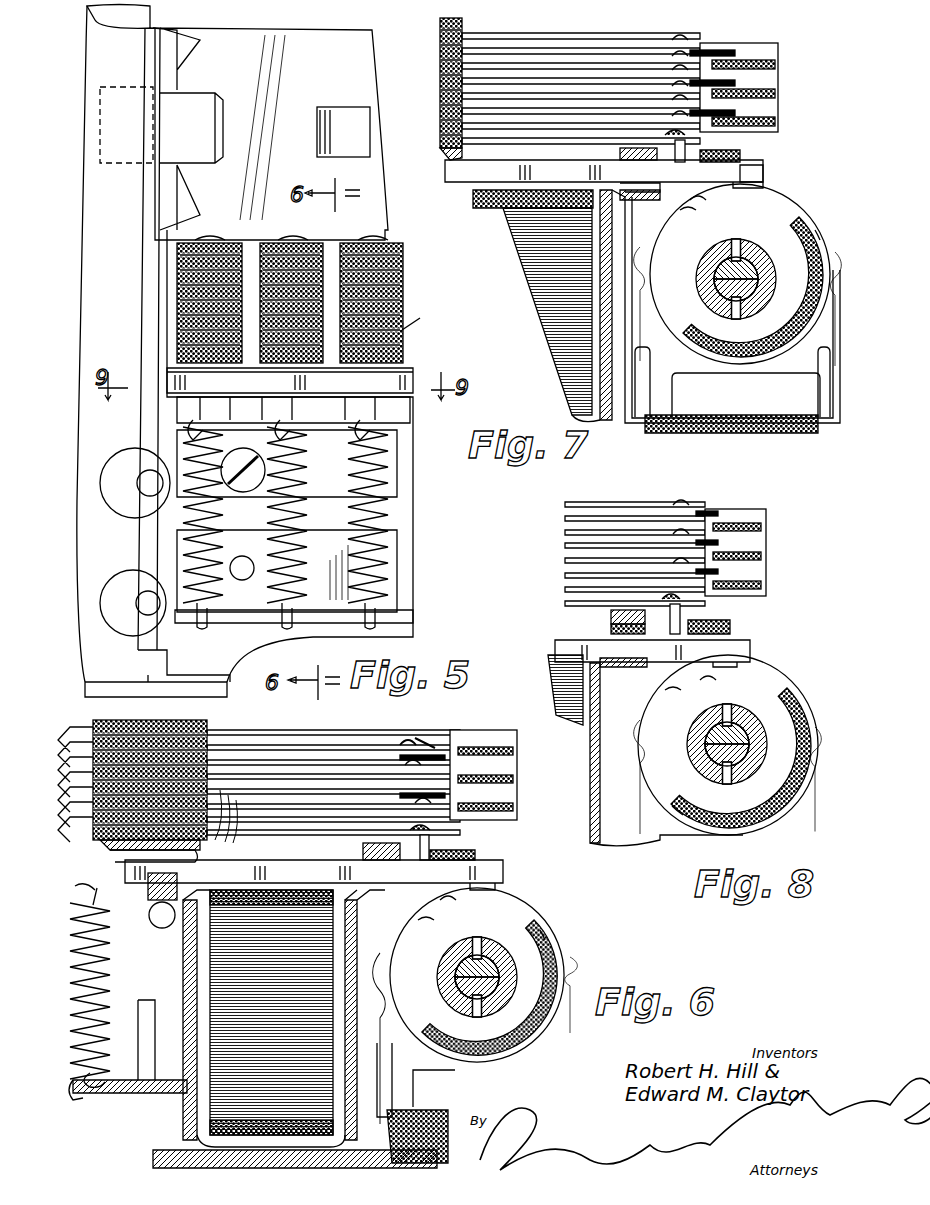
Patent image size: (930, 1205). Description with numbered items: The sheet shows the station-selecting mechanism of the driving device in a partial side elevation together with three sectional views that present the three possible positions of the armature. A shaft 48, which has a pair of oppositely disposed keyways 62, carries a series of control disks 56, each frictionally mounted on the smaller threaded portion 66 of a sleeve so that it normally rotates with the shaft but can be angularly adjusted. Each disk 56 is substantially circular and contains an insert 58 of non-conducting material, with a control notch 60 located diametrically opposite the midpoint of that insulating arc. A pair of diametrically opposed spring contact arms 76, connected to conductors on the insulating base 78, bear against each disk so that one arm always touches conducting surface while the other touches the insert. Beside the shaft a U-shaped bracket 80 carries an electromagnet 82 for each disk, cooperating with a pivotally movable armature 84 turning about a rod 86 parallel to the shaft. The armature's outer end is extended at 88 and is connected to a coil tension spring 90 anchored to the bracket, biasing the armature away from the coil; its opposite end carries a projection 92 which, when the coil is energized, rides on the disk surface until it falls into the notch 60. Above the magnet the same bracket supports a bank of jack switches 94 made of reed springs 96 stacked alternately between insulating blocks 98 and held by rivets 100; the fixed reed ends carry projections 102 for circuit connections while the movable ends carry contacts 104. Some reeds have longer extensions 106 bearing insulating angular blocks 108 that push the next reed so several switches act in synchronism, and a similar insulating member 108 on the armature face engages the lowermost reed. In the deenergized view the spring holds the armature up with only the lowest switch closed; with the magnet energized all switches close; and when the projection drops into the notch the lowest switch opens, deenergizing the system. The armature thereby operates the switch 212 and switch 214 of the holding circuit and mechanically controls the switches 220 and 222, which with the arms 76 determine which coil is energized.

In FIG. 7, the shaft 48 is at (700, 278).
In FIG. 8, the shaft 48 is at (757, 730).
In FIG. 6, the shaft 48 is at (500, 965).
In FIG. 7, the control disk 56 is at (788, 200).
In FIG. 8, the control disk 56 is at (777, 672).
In FIG. 6, the control disk 56 is at (520, 900).
In FIG. 7, the insert of non-electrical conducting material 58 is at (814, 226).
In FIG. 8, the insert of non-electrical conducting material 58 is at (683, 815).
In FIG. 6, the insert of non-electrical conducting material 58 is at (555, 933).
In FIG. 7, the control notch 60 is at (670, 210).
In FIG. 8, the control notch 60 is at (706, 683).
In FIG. 6, the control notch 60 is at (432, 912).
In FIG. 7, the keyways 62 is at (762, 272).
In FIG. 8, the keyways 62 is at (700, 735).
In FIG. 6, the keyways 62 is at (450, 968).
In FIG. 7, the smaller diameter threaded portion 66 is at (736, 239).
In FIG. 8, the smaller diameter threaded portion 66 is at (727, 704).
In FIG. 6, the smaller diameter threaded portion 66 is at (470, 1010).
In FIG. 7, the spring contact arms 76 is at (742, 295).
In FIG. 8, the spring contact arms 76 is at (729, 761).
In FIG. 6, the spring contact arms 76 is at (482, 1038).
In FIG. 7, the insulating base 78 is at (802, 415).
In FIG. 6, the insulating base 78 is at (410, 1110).
In FIG. 5, the U-shaped bracket 80 is at (400, 492).
In FIG. 7, the U-shaped bracket 80 is at (610, 210).
In FIG. 8, the U-shaped bracket 80 is at (600, 780).
In FIG. 6, the U-shaped bracket 80 is at (357, 935).
In FIG. 7, the electromagnet 82 is at (532, 294).
In FIG. 8, the electromagnet 82 is at (558, 676).
In FIG. 6, the electromagnet 82 is at (210, 1105).
In FIG. 5, the armature 84 is at (200, 410).
In FIG. 7, the armature 84 is at (572, 175).
In FIG. 8, the armature 84 is at (587, 648).
In FIG. 6, the armature 84 is at (256, 878).
In FIG. 5, the rod 86 is at (277, 469).
In FIG. 6, the rod 86 is at (155, 900).
In FIG. 5, the armature extension 88 is at (200, 430).
In FIG. 6, the armature extension 88 is at (80, 888).
In FIG. 5, the coil tension spring 90 is at (285, 525).
In FIG. 6, the coil tension spring 90 is at (110, 968).
In FIG. 7, the projection 92 is at (750, 172).
In FIG. 8, the projection 92 is at (730, 650).
In FIG. 6, the projection 92 is at (500, 890).
In FIG. 7, the jack switches 94 is at (549, 87).
In FIG. 8, the jack switches 94 is at (617, 544).
In FIG. 6, the jack switches 94 is at (259, 785).
In FIG. 7, the reed springs 96 is at (445, 90).
In FIG. 8, the reed springs 96 is at (577, 575).
In FIG. 6, the reed springs 96 is at (240, 838).
In FIG. 5, the insulating blocks 98 is at (418, 320).
In FIG. 7, the insulating blocks 98 is at (440, 128).
In FIG. 6, the insulating blocks 98 is at (95, 846).
In FIG. 5, the rivets 100 is at (185, 368).
In FIG. 6, the rivets 100 is at (120, 860).
In FIG. 5, the projections 102 is at (385, 282).
In FIG. 6, the projections 102 is at (75, 773).
In FIG. 7, the contacts 104 is at (700, 140).
In FIG. 8, the contacts 104 is at (685, 514).
In FIG. 6, the contacts 104 is at (415, 735).
In FIG. 7, the reed extensions 106 is at (752, 73).
In FIG. 8, the reed extensions 106 is at (742, 533).
In FIG. 6, the reed extensions 106 is at (469, 782).
In FIG. 7, the insulating angular block 108 is at (780, 118).
In FIG. 8, the insulating angular block 108 is at (767, 566).
In FIG. 6, the insulating angular block 108 is at (512, 780).
In FIG. 7, the switch 212 is at (703, 35).
In FIG. 8, the switch 212 is at (698, 492).
In FIG. 6, the switch 212 is at (410, 727).
In FIG. 7, the switch 214 is at (665, 165).
In FIG. 8, the switch 214 is at (630, 632).
In FIG. 6, the switch 214 is at (362, 847).
In FIG. 7, the switch 220 is at (708, 75).
In FIG. 8, the switch 220 is at (704, 542).
In FIG. 6, the switch 220 is at (442, 748).
In FIG. 7, the switch 222 is at (708, 107).
In FIG. 8, the switch 222 is at (704, 573).
In FIG. 6, the switch 222 is at (442, 794).